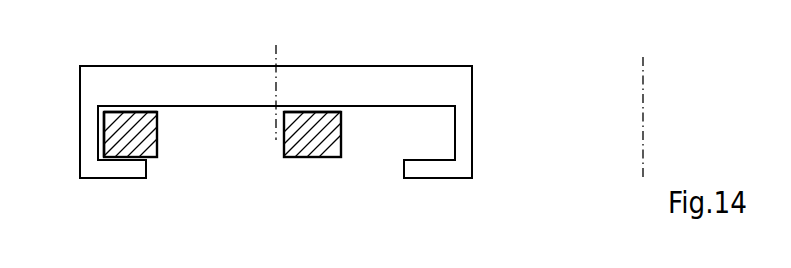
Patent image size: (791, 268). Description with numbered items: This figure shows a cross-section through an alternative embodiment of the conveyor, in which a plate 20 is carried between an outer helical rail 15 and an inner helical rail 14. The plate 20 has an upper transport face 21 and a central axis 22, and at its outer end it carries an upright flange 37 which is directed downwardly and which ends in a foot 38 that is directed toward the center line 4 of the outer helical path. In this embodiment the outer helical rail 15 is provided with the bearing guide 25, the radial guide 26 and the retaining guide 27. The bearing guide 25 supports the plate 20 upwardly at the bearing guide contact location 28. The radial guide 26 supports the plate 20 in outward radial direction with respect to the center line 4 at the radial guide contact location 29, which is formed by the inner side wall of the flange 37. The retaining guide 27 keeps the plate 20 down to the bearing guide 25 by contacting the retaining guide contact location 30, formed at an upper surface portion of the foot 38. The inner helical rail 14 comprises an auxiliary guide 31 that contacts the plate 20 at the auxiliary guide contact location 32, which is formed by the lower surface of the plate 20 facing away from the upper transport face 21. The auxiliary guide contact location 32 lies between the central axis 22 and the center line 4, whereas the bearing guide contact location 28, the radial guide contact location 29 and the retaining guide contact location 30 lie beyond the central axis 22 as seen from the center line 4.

The center line 4 is at (645, 88).
The inner helical rail 14 is at (293, 148).
The outer helical rail 15 is at (147, 142).
The plate 20 is at (210, 75).
The upper transport face 21 is at (301, 65).
The central axis 22 is at (273, 63).
The bearing guide 25 is at (143, 112).
The radial guide 26 is at (102, 116).
The retaining guide 27 is at (122, 158).
The bearing guide contact location 28 is at (167, 107).
The radial guide contact location 29 is at (104, 114).
The retaining guide contact location 30 is at (105, 148).
The auxiliary guide 31 is at (332, 112).
The auxiliary guide contact location 32 is at (363, 106).
The flange 37 is at (88, 132).
The foot 38 is at (102, 170).